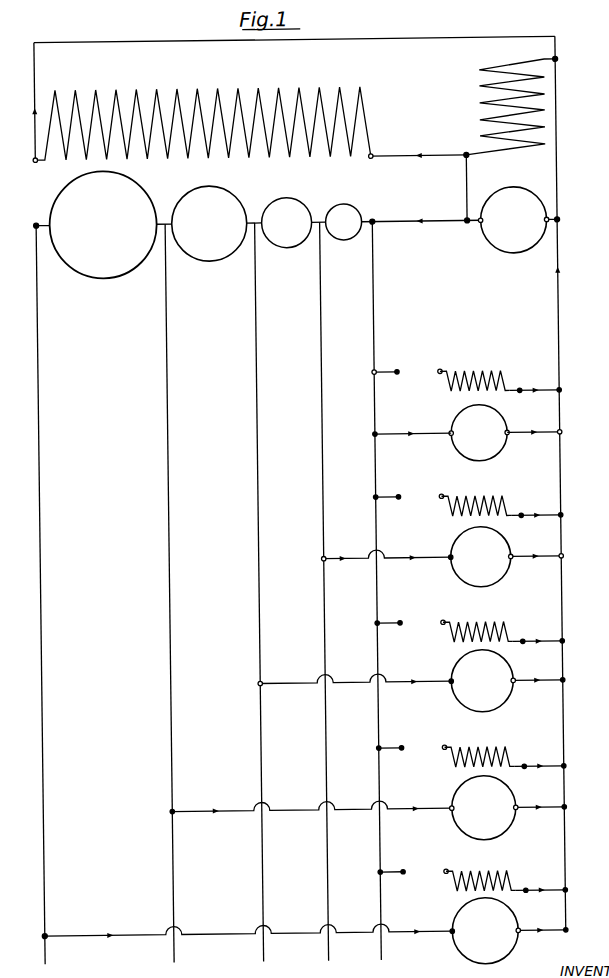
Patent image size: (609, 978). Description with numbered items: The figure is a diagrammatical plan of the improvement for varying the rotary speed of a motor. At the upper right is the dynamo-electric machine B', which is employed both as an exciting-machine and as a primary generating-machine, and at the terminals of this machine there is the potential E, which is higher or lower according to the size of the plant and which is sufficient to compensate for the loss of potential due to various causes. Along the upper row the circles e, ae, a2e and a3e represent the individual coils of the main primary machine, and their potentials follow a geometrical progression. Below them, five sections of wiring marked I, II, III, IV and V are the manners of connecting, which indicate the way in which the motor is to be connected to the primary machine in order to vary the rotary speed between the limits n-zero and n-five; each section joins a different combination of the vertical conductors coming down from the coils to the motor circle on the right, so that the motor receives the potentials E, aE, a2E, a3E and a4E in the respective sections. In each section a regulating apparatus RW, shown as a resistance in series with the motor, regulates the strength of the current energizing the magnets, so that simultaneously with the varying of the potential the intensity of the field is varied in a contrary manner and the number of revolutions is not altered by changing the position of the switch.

The dynamo-electric machine B' is at (487, 107).
The individual coil of the main primary machine a3e is at (103, 225).
The individual coil of the main primary machine a2e is at (209, 224).
The individual coil of the main primary machine ae is at (286, 222).
The individual coil of the main primary machine e is at (343, 222).
The potential at the terminals of the dynamo-electric machine E is at (499, 323).
The regulating apparatus RW is at (470, 628).
The manner of connecting I is at (467, 416).
The manner of connecting II is at (442, 540).
The manner of connecting III is at (411, 665).
The manner of connecting IV is at (368, 791).
The manner of connecting V is at (305, 916).
The motor connection potential aE is at (480, 556).
The motor connection potential a2E is at (482, 680).
The motor connection potential a3E is at (483, 807).
The motor connection potential a4E is at (485, 930).